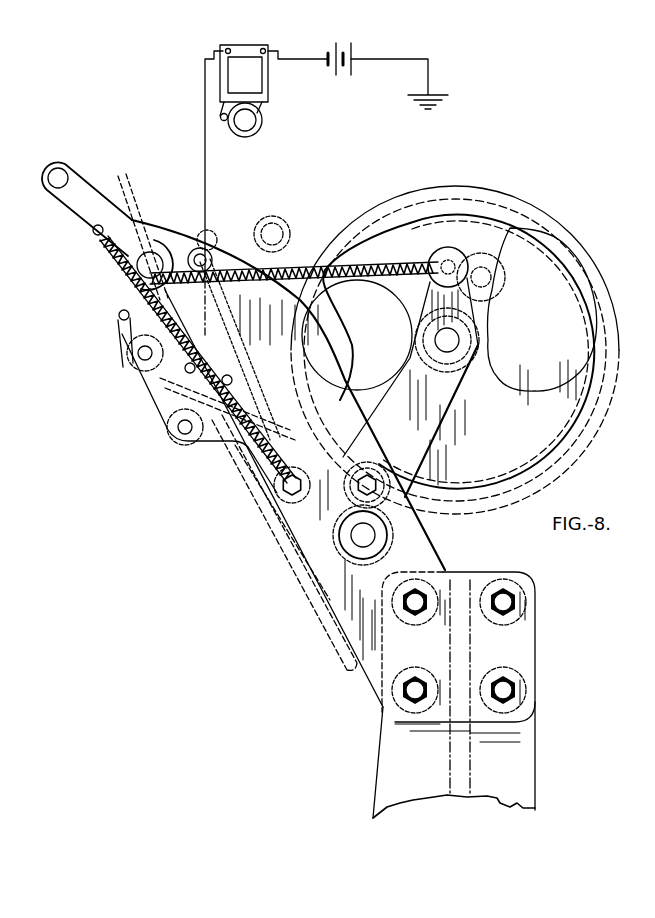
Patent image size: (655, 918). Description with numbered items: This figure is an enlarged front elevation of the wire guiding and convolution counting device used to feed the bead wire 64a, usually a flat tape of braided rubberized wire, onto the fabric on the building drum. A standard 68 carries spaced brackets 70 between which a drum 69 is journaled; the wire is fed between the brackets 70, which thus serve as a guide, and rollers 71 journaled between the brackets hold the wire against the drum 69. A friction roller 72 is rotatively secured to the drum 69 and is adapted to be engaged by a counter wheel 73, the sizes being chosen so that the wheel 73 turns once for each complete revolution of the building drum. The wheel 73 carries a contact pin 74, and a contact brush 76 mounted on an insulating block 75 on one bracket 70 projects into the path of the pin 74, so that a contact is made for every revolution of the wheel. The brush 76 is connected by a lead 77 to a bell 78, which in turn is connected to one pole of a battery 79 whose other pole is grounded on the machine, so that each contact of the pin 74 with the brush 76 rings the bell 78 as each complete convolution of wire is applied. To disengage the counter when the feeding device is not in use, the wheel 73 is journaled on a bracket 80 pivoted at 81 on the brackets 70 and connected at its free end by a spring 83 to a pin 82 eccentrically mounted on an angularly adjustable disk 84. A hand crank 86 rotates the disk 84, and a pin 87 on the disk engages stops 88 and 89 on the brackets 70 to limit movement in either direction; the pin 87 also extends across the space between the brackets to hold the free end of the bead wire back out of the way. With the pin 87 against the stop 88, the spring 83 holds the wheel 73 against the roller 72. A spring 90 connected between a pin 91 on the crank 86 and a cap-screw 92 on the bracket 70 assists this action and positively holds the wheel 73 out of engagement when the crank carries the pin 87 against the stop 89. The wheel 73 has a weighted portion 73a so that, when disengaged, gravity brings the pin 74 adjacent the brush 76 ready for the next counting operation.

The bead wire 64a is at (300, 588).
The standard 68 is at (510, 753).
The drum 69 is at (263, 463).
The brackets 70 is at (340, 603).
The rollers 71 is at (130, 368).
The friction roller 72 is at (284, 241).
The counter wheel 73 is at (563, 450).
The weighted portion 73a is at (497, 402).
The contact pin 74 is at (311, 440).
The insulating block 75 is at (222, 462).
The contact brush 76 is at (265, 512).
The lead 77 is at (208, 178).
The bell 78 is at (268, 80).
The battery 79 is at (352, 70).
The bracket 80 is at (425, 408).
The pivot 81 is at (376, 535).
The pin 82 is at (114, 296).
The spring 83 is at (394, 262).
The angularly adjustable disk 84 is at (119, 316).
The hand crank 86 is at (92, 192).
The pin 87 is at (120, 320).
The stop 88 is at (118, 340).
The stop 89 is at (133, 222).
The spring 90 is at (207, 373).
The pin 91 is at (96, 236).
The cap-screw 92 is at (288, 498).